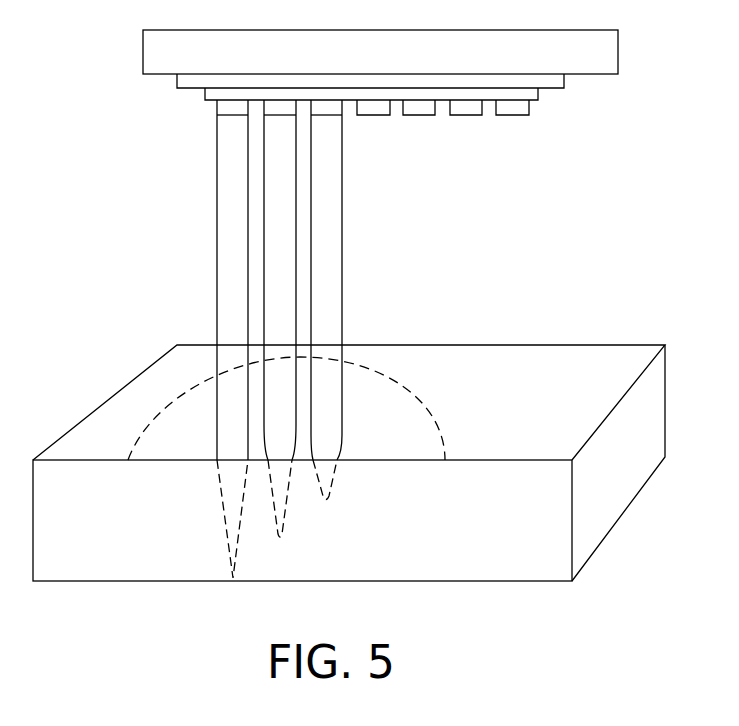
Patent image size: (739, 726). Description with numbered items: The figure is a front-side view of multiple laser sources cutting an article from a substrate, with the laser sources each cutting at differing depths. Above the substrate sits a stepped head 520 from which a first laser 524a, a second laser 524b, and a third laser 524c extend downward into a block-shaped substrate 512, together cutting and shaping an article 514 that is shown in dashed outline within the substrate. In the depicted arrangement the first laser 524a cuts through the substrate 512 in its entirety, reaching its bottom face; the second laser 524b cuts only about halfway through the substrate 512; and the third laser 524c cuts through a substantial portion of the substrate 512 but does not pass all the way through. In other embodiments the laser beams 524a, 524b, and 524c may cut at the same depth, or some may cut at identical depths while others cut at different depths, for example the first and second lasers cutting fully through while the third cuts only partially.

The needle hub / manifold head 520 is at (562, 82).
The first laser 524a is at (228, 150).
The second laser 524b is at (283, 155).
The third laser 524c is at (328, 202).
The article 514 is at (387, 390).
The substrate 512 is at (550, 517).